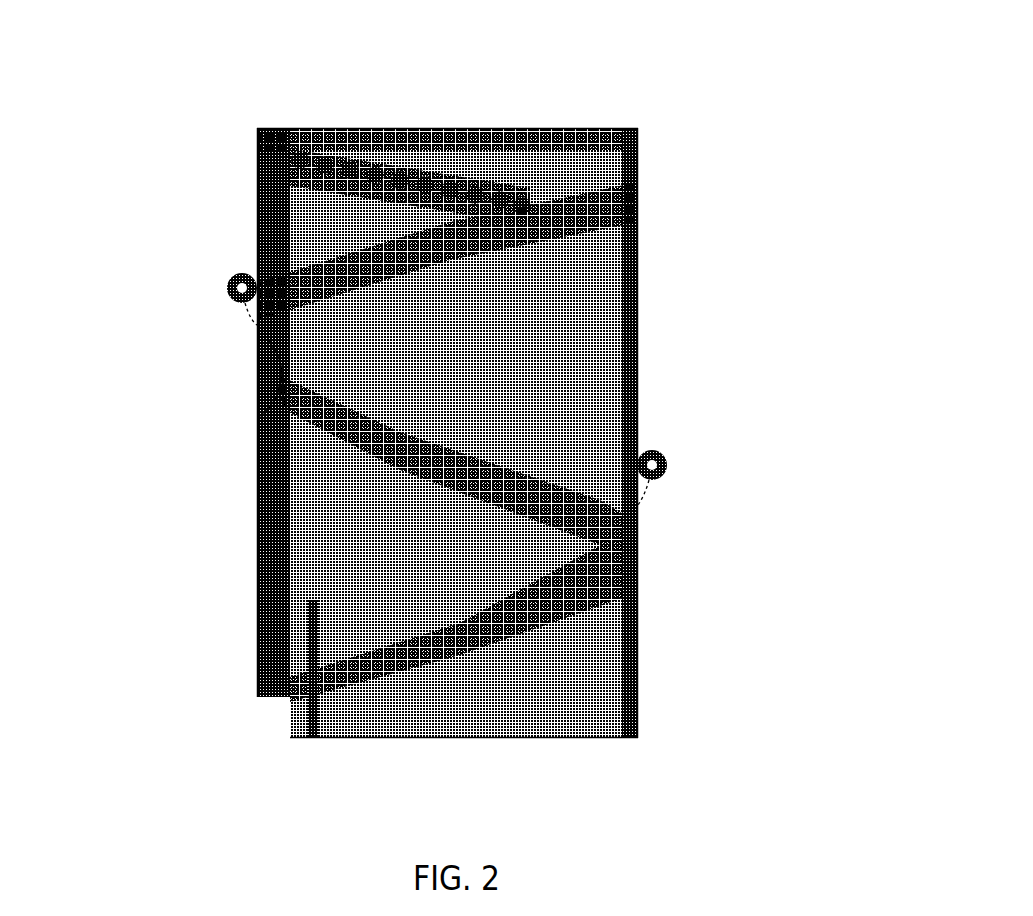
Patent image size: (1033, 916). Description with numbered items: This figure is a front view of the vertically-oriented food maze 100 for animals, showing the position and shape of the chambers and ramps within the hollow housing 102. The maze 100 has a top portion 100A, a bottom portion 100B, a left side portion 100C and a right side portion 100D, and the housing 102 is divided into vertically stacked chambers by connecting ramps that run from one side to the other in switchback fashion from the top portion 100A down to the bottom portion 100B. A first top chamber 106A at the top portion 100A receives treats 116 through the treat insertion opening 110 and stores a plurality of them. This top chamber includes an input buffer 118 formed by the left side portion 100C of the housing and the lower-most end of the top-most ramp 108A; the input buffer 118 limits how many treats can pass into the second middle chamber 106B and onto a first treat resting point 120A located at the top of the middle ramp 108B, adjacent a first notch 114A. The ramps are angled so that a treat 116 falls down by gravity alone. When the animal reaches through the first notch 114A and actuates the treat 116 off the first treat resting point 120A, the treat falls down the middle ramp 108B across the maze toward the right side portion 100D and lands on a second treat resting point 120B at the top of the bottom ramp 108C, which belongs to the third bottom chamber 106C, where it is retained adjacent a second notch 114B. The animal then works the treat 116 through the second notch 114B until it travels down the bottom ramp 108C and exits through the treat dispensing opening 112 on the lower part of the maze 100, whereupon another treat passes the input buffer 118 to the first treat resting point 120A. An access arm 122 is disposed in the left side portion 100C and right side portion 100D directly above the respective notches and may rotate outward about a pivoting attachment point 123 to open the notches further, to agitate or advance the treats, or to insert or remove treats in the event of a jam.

The maze 100 is at (458, 32).
The top portion 100A is at (363, 127).
The bottom portion 100B is at (436, 741).
The left side portion 100C is at (258, 500).
The right side portion 100D is at (638, 268).
The housing 102 is at (645, 218).
The first top chamber 106A is at (598, 170).
The second middle chamber 106B is at (520, 303).
The third bottom chamber 106C is at (467, 580).
The top-most ramp 108A is at (293, 192).
The middle ramp 108B is at (390, 440).
The bottom ramp 108C is at (432, 650).
The treat insertion opening 110 is at (280, 128).
The treat dispensing opening 112 is at (262, 725).
The first notch 114A is at (266, 340).
The second notch 114B is at (633, 535).
The treat 116 is at (262, 335).
The input buffer 118 is at (440, 247).
The first treat resting point 120A is at (285, 398).
The second treat resting point 120B is at (617, 540).
The access arm 122 is at (257, 255).
The pivoting attachment point 123 is at (263, 172).